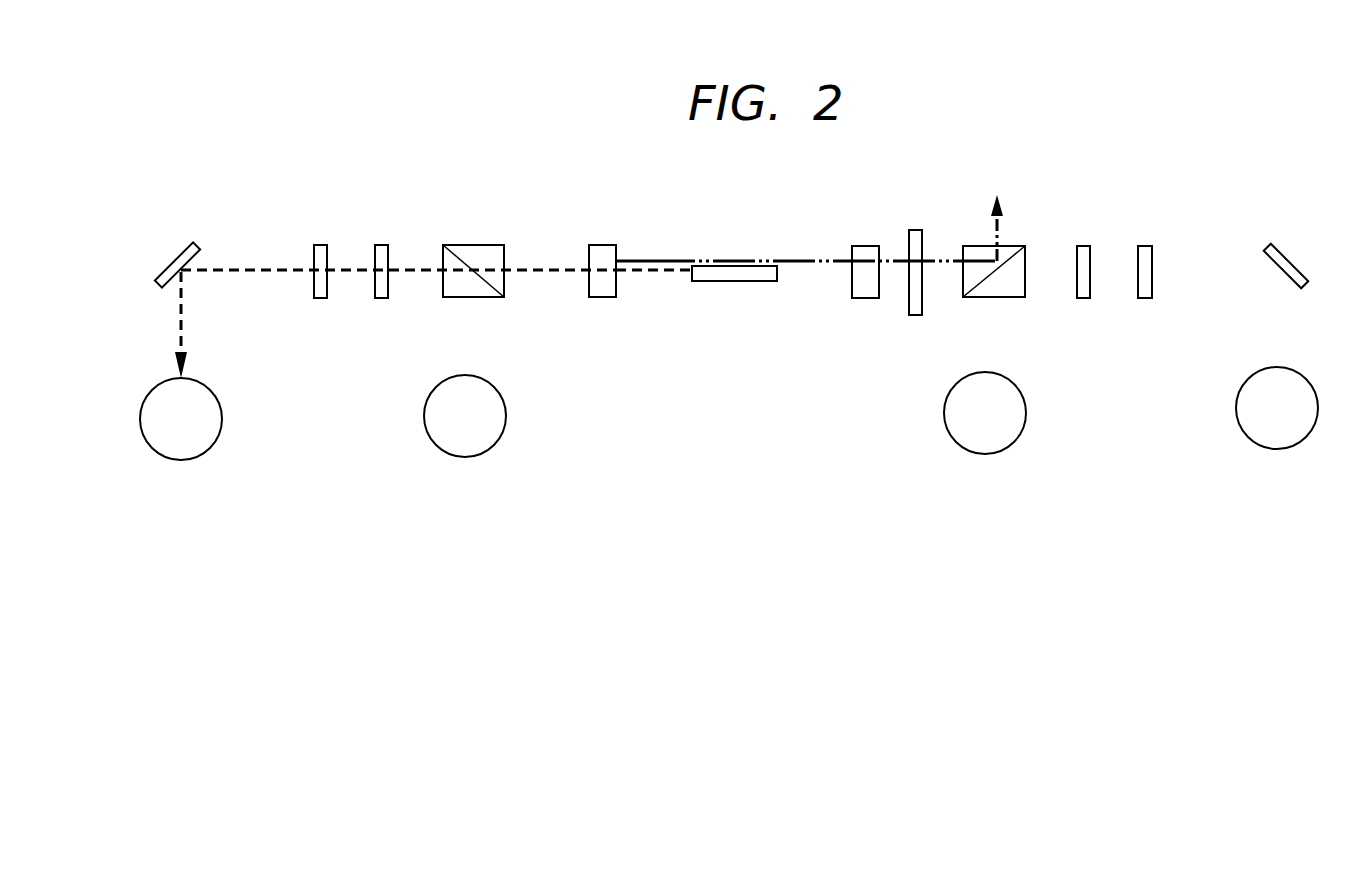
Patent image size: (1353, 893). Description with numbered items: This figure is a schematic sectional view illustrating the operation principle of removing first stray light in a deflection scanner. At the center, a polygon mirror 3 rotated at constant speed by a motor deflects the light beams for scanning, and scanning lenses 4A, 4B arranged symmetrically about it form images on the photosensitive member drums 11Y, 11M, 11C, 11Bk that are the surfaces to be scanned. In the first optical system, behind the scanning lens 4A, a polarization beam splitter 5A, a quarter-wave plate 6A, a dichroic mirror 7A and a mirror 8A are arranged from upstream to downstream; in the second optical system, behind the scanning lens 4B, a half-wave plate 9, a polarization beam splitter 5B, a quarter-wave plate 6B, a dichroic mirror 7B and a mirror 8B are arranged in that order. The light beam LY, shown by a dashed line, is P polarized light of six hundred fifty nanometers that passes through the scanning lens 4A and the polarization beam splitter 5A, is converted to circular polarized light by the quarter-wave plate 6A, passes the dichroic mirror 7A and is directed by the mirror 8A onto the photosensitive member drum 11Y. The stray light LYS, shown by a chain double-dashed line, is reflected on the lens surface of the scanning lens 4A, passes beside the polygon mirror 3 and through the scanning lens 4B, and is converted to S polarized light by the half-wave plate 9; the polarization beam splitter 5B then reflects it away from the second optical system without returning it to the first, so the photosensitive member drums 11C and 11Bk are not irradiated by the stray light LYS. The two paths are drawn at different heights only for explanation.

The polygon mirror 3 is at (713, 272).
The scanning lens 4A is at (600, 250).
The scanning lens 4B is at (867, 252).
The polarization beam splitter 5A is at (480, 252).
The polarization beam splitter 5B is at (1015, 267).
The quarter-wave plate 6A is at (382, 250).
The quarter-wave plate 6B is at (1085, 252).
The dichroic mirror 7A is at (320, 250).
The dichroic mirror 7B is at (1147, 252).
The mirror 8A is at (191, 248).
The mirror 8B is at (1280, 258).
The half-wave plate 9 is at (915, 237).
The light beam LY is at (650, 272).
The first stray light LYS is at (644, 258).
The photosensitive member drum 11Y is at (192, 445).
The photosensitive member drum 11M is at (473, 440).
The photosensitive member drum 11C is at (972, 433).
The photosensitive member drum 11Bk is at (1272, 433).